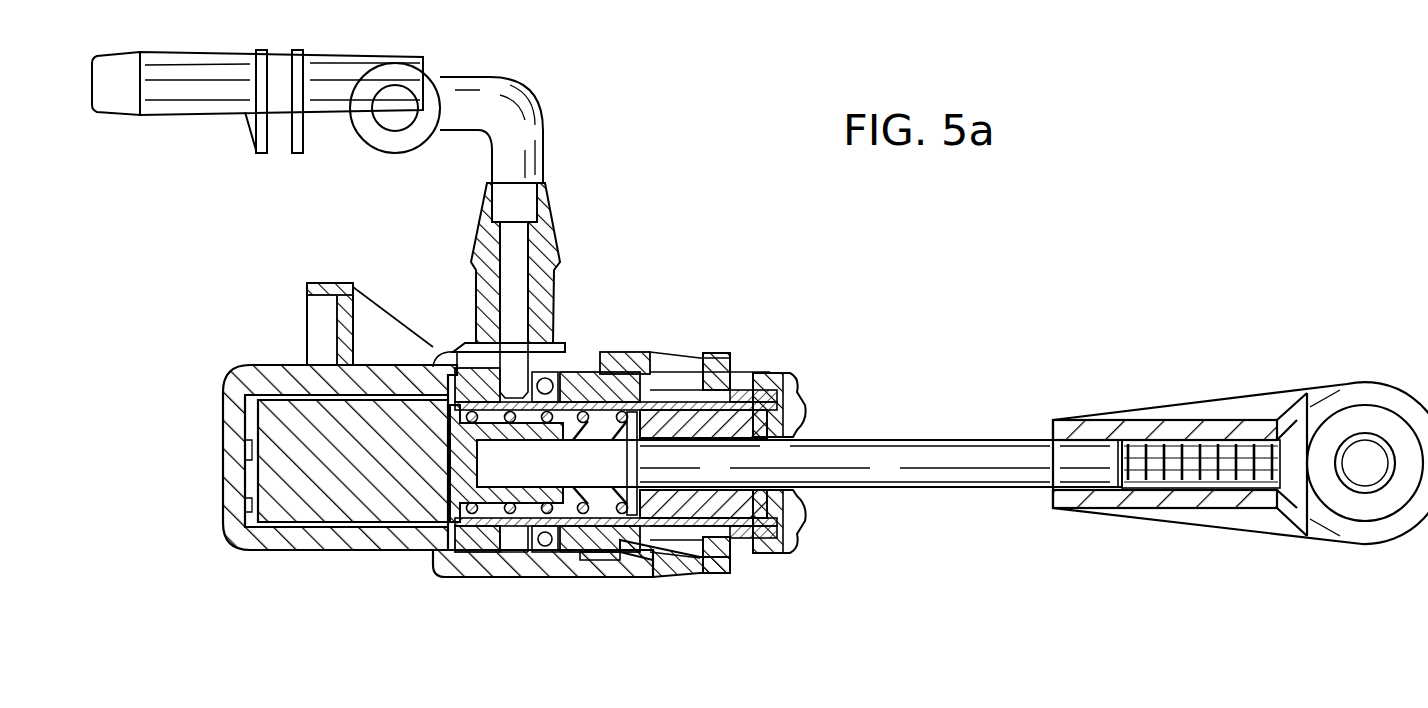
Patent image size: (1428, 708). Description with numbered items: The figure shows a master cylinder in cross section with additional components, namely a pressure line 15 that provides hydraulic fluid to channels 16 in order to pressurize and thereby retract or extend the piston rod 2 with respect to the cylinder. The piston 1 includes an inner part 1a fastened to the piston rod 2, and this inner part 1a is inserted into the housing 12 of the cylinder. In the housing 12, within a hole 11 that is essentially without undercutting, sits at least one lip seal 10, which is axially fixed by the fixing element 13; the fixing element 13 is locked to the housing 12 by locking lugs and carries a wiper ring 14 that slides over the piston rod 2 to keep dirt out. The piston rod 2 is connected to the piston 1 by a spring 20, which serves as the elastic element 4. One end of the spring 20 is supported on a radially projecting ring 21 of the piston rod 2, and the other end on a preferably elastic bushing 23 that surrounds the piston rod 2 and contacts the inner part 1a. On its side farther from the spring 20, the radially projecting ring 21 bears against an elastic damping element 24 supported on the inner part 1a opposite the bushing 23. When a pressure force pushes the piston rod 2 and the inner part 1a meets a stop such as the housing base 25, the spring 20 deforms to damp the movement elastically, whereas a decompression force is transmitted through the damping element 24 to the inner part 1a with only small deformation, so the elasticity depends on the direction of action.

The piston 1 is at (737, 378).
The inner part 1a is at (628, 385).
The piston rod 2 is at (905, 463).
The elastic element 4 is at (567, 507).
The lip seal 10 is at (553, 370).
The hole 11 is at (603, 532).
The housing 12 is at (495, 565).
The fixing element 13 is at (677, 567).
The wiper ring 14 is at (803, 417).
The pressure line 15 is at (470, 350).
The channels 16 is at (247, 365).
The spring 20 is at (590, 385).
The radially projecting ring 21 is at (672, 385).
The bushing 23 is at (460, 473).
The elastic damping element 24 is at (740, 543).
The housing base 25 is at (235, 486).